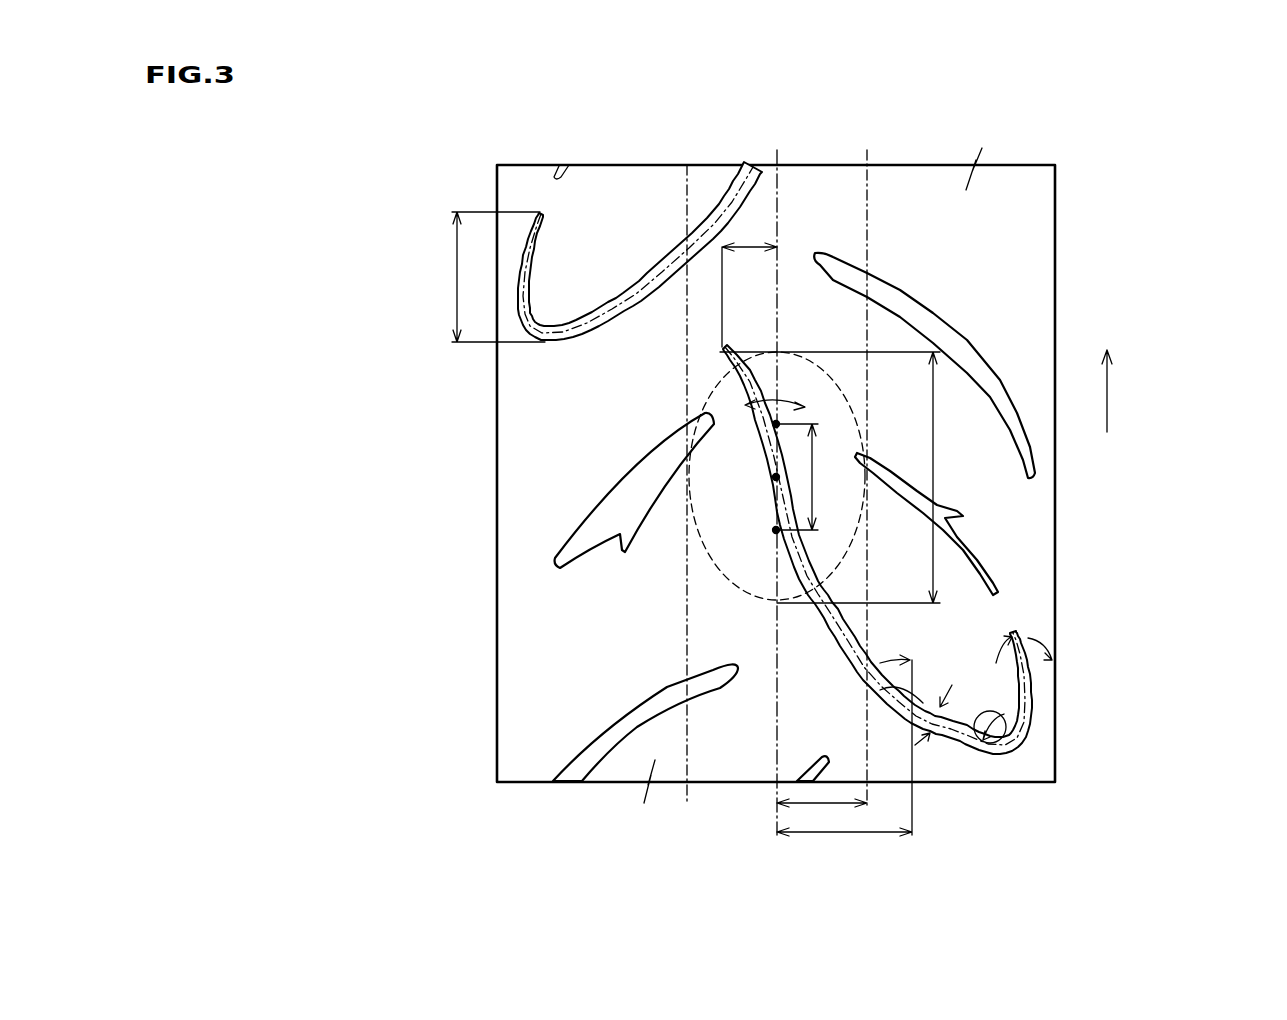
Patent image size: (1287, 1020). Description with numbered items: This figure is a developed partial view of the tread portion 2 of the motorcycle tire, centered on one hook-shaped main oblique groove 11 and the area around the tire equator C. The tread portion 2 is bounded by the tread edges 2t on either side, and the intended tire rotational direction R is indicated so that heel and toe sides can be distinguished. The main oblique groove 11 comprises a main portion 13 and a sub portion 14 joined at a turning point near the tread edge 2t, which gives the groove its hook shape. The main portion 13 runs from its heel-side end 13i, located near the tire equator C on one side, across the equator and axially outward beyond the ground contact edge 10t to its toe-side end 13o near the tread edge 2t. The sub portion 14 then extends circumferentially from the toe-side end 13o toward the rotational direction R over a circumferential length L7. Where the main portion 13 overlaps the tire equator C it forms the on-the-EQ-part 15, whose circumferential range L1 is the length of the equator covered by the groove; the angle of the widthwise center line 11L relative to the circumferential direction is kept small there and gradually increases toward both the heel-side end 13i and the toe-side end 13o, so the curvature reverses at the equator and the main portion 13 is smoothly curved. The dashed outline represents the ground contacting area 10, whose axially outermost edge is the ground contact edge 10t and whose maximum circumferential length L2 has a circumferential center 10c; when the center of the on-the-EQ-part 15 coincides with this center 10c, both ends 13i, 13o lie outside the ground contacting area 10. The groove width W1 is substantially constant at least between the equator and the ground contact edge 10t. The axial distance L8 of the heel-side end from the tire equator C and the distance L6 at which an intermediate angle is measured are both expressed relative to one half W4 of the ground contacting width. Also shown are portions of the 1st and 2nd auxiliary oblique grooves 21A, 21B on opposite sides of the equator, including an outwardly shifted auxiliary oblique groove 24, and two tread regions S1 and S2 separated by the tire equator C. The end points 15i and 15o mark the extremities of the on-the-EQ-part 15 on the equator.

The tread portion 2 is at (1048, 131).
The tread edge 2t is at (497, 186).
The ground contacting area 10 is at (725, 578).
The circumferential center of the ground contacting area 10c is at (776, 477).
The ground contact edge 10t is at (685, 190).
The main oblique groove 11 is at (637, 129).
The widthwise center line 11L is at (1022, 755).
The main portion 13 is at (647, 283).
The heel-side end 13i is at (713, 353).
The toe-side end 13o is at (1039, 753).
The sub portion 14 is at (538, 238).
The on-the-EQ-part 15 is at (757, 501).
The inner end of sipe 15i is at (776, 424).
The outer end of sipe 15o is at (776, 530).
The 1st auxiliary oblique groove 21A is at (920, 291).
The 2nd auxiliary oblique groove 21B is at (600, 748).
The outwardly shifted auxiliary oblique groove 24 is at (967, 547).
The tire equator C is at (776, 480).
The first tread region S1 is at (744, 130).
The second tread region S2 is at (618, 832).
The intended tire rotational direction R is at (1129, 395).
The circumferential range L1 is at (803, 477).
The maximum circumferential length L2 is at (834, 477).
The distance L6 is at (844, 752).
The circumferential length of the sub portion L7 is at (493, 277).
The axial distance L8 is at (749, 283).
The groove width W1 is at (940, 743).
The one half of the ground contacting width W4 is at (822, 805).